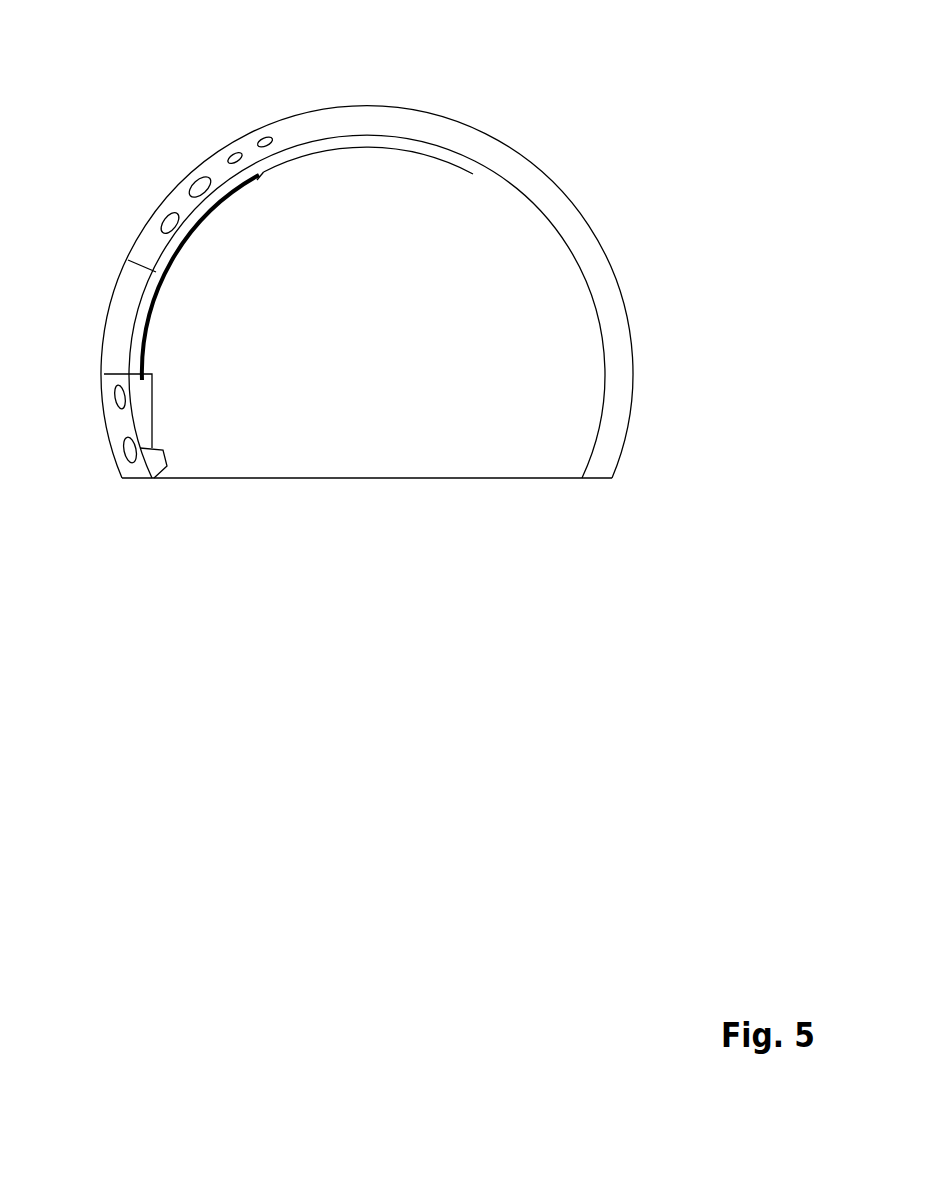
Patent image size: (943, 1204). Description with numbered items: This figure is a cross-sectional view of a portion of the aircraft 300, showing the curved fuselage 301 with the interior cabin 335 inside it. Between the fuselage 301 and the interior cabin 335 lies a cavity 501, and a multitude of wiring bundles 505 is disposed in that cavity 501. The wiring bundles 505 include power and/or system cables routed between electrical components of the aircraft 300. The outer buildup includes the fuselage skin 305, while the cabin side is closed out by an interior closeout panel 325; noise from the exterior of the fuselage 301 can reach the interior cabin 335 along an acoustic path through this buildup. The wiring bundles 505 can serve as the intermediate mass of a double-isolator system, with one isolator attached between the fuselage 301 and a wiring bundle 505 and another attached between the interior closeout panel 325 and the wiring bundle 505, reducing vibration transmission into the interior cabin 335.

The aircraft 300 is at (138, 83).
The fuselage 301 is at (357, 103).
The fuselage skin 305 is at (108, 325).
The interior closeout panel 325 is at (147, 315).
The interior cabin 335 is at (503, 202).
The cavity 501 is at (423, 125).
The wiring bundles 505 is at (173, 210).